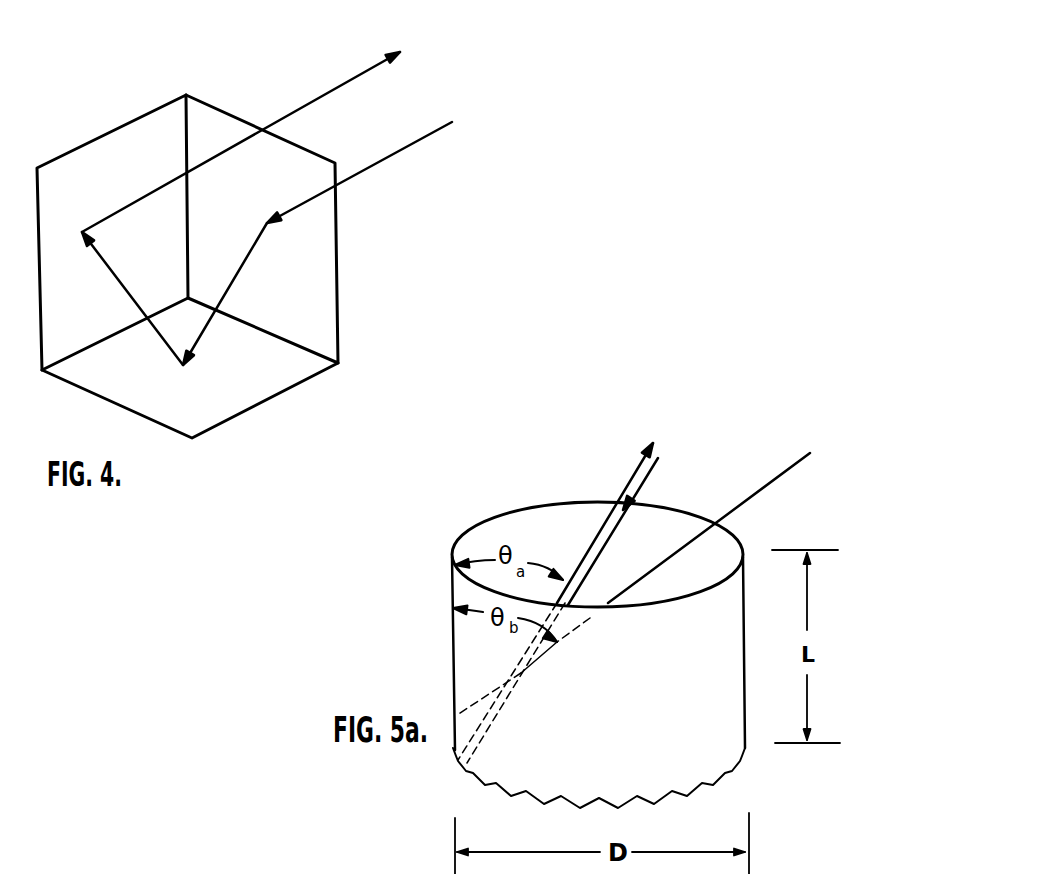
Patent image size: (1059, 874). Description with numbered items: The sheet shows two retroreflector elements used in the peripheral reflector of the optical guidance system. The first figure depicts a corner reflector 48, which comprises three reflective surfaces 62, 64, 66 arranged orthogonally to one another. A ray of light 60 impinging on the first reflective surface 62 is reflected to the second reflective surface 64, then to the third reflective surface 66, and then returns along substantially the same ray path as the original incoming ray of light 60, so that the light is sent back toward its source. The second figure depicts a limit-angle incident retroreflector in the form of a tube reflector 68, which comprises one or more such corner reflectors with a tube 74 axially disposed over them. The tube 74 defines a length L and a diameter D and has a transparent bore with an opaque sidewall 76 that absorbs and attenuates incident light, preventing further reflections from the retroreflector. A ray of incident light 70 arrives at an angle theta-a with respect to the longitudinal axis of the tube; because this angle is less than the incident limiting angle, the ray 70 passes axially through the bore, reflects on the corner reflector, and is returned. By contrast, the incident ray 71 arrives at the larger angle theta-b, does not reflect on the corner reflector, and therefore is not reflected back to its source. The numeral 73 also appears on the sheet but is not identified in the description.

In FIG. 4, the corner reflector 48 is at (338, 266).
In FIG. 4, the ray of light 60 is at (330, 88).
In FIG. 4, the first reflective surface 62 is at (312, 285).
In FIG. 4, the second reflective surface 64 is at (265, 393).
In FIG. 4, the third reflective surface 66 is at (126, 173).
In FIG. 5A, the tube reflector 68 is at (650, 575).
In FIG. 5A, the ray of incident light 70 is at (633, 480).
In FIG. 5A, the incident ray 71 is at (767, 482).
In FIG. 5A, the reflector element 73 is at (317, 864).
In FIG. 5A, the tube 74 is at (745, 642).
In FIG. 5A, the opaque sidewall 76 is at (662, 548).